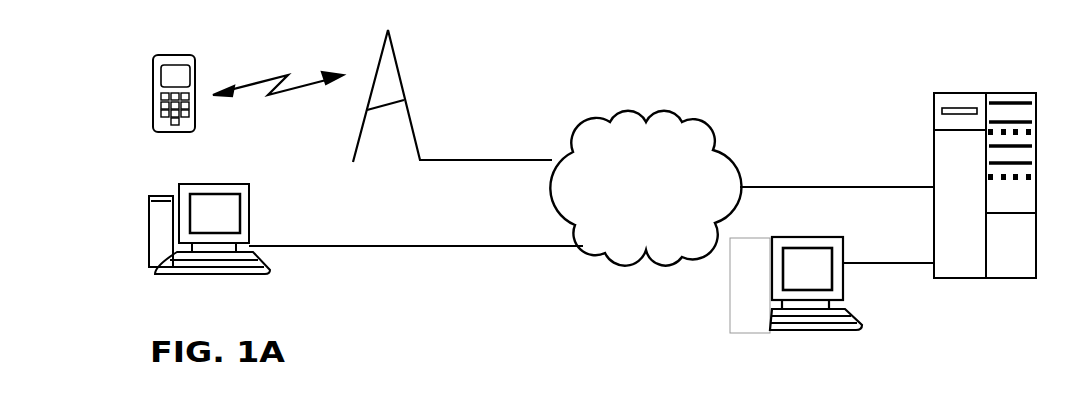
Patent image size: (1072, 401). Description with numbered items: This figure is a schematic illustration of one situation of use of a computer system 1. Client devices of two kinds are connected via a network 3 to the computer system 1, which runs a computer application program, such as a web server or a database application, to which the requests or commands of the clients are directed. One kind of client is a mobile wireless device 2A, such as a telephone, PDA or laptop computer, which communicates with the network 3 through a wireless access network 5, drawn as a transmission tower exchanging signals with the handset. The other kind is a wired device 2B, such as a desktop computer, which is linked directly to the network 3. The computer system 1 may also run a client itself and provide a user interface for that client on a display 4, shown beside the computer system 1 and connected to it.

The computer system 1 is at (960, 93).
The mobile wireless device 2A is at (149, 93).
The wired device 2B is at (343, 229).
The network 3 is at (742, 188).
The display 4 is at (793, 265).
The wireless access network 5 is at (398, 55).